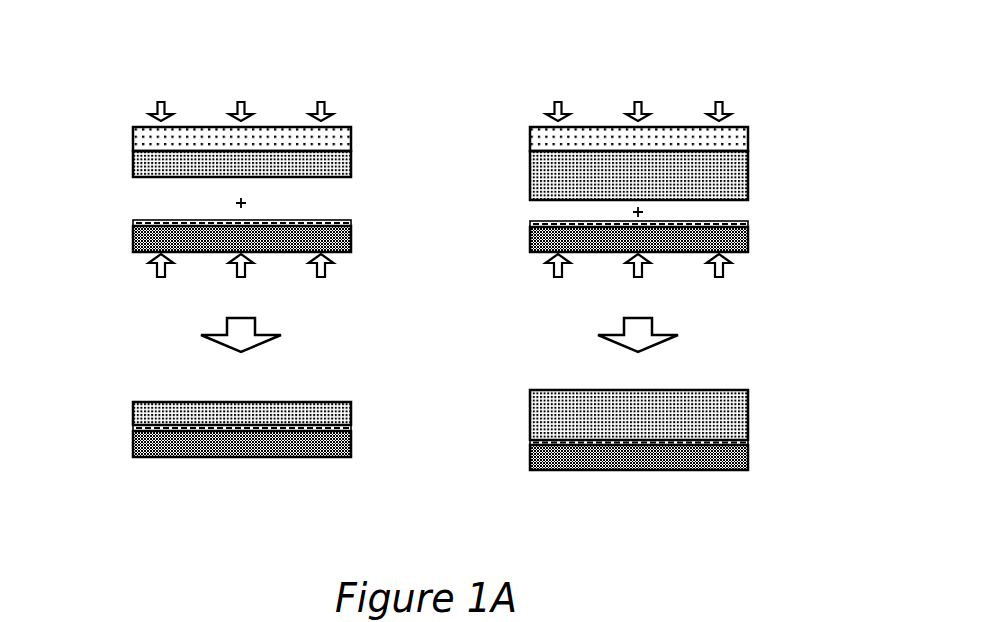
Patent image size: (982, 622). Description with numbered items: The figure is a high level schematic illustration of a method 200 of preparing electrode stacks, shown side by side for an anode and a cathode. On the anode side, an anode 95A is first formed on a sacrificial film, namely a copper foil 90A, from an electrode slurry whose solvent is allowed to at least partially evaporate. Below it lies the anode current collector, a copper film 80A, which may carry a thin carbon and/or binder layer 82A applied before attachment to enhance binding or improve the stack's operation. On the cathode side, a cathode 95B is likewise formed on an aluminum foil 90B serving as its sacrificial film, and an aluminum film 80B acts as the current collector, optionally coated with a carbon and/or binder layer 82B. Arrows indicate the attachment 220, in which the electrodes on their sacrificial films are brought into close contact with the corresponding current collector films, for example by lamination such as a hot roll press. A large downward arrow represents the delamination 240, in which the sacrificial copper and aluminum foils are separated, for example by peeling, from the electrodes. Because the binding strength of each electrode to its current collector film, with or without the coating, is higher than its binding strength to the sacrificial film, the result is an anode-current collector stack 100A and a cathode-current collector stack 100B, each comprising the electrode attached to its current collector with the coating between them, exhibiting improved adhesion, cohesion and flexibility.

The method of preparing electrode stacks 200 is at (108, 30).
The copper foil 90A is at (133, 143).
The anode 95A is at (133, 170).
The carbon and/or binder layer 82A is at (133, 223).
The copper film 80A is at (133, 245).
The aluminum foil 90B is at (530, 143).
The cathode 95B is at (530, 170).
The carbon and/or binder layer 82B is at (530, 223).
The aluminum film 80B is at (530, 245).
The attachment 220 is at (155, 277).
The delamination 240 is at (203, 336).
The anode-current collector stack 100A is at (173, 473).
The cathode-current collector stack 100B is at (574, 487).